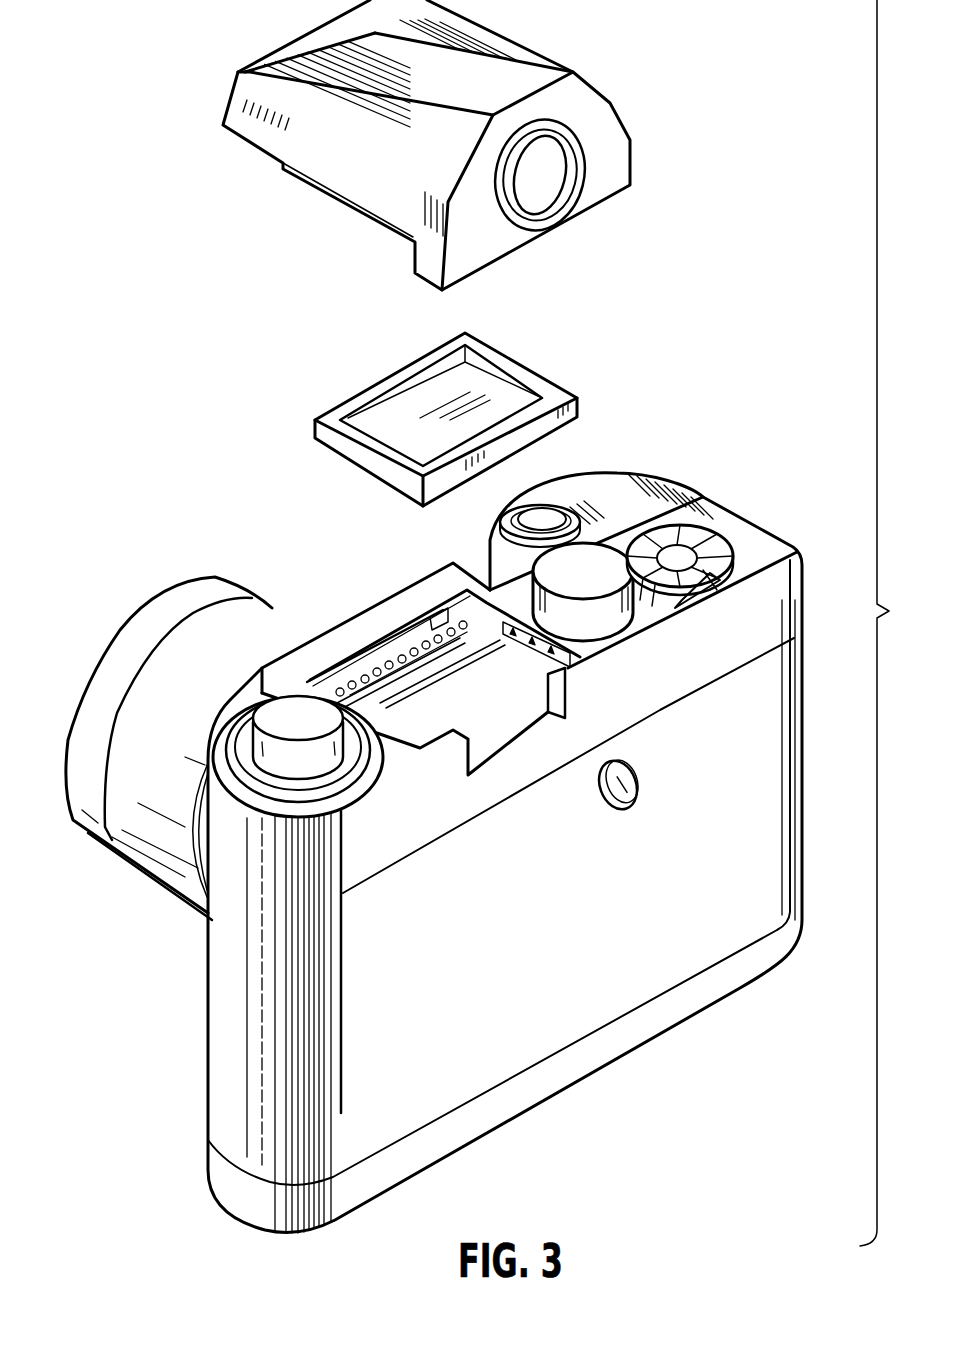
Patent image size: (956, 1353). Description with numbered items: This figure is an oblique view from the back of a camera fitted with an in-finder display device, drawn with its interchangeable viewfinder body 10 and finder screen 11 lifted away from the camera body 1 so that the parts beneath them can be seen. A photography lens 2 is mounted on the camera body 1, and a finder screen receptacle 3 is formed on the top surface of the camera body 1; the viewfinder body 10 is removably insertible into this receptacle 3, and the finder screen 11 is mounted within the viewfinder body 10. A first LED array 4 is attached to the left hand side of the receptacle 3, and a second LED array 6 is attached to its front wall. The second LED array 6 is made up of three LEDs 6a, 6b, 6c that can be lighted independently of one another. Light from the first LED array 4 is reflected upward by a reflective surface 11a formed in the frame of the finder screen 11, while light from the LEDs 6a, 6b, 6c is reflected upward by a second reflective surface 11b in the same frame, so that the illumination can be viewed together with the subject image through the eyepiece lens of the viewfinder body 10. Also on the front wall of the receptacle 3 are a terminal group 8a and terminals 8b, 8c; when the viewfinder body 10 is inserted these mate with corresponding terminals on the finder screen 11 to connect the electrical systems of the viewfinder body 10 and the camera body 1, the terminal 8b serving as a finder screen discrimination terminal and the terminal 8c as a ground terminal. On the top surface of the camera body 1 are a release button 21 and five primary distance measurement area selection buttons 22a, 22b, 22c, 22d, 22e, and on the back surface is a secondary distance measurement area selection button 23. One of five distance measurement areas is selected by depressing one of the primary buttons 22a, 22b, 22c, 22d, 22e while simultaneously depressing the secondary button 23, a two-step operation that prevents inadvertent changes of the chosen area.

The camera body 1 is at (623, 1037).
The photography lens 2 is at (183, 610).
The finder screen receptacle 3 is at (503, 710).
The first LED array 4 is at (570, 663).
The second LED array 6 is at (356, 610).
The LED 6a is at (343, 675).
The LED 6b is at (387, 655).
The LED 6c is at (430, 627).
The terminal group 8a is at (440, 673).
The terminal 8b is at (373, 700).
The terminal 8c is at (333, 706).
The interchangeable viewfinder body 10 is at (350, 182).
The finder screen 11 is at (430, 419).
The reflective surface 11a is at (545, 378).
The reflective surface 11b is at (348, 398).
The release button 21 is at (550, 523).
The primary distance measurement area selection button 22a is at (726, 550).
The primary distance measurement area selection button 22b is at (722, 535).
The primary distance measurement area selection button 22c is at (657, 540).
The primary distance measurement area selection button 22d is at (667, 572).
The primary distance measurement area selection button 22e is at (708, 572).
The secondary distance measurement area selection button 23 is at (640, 788).